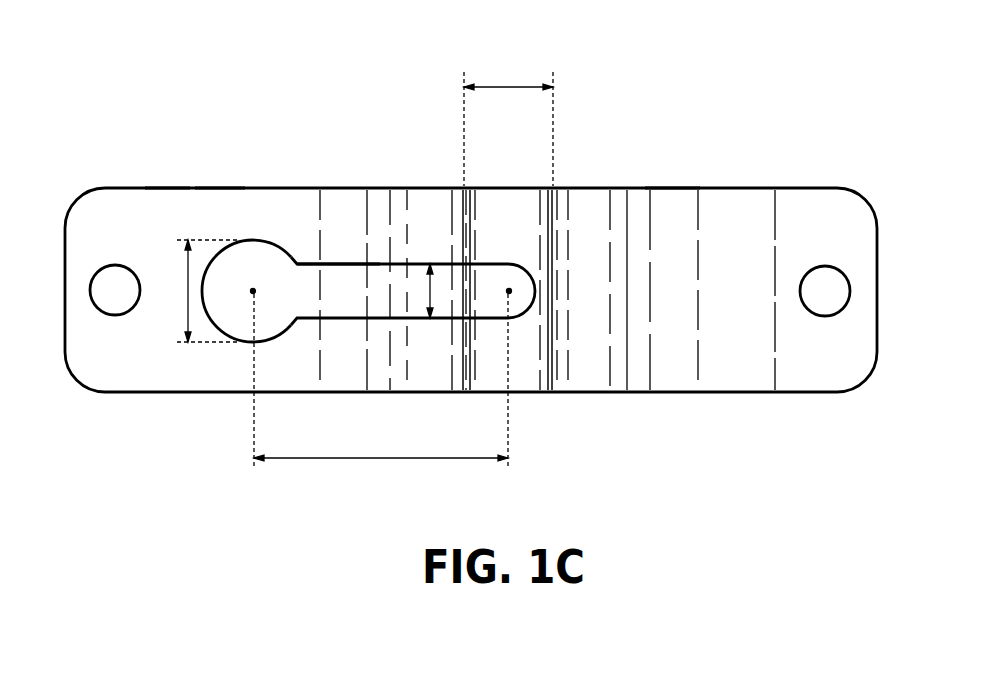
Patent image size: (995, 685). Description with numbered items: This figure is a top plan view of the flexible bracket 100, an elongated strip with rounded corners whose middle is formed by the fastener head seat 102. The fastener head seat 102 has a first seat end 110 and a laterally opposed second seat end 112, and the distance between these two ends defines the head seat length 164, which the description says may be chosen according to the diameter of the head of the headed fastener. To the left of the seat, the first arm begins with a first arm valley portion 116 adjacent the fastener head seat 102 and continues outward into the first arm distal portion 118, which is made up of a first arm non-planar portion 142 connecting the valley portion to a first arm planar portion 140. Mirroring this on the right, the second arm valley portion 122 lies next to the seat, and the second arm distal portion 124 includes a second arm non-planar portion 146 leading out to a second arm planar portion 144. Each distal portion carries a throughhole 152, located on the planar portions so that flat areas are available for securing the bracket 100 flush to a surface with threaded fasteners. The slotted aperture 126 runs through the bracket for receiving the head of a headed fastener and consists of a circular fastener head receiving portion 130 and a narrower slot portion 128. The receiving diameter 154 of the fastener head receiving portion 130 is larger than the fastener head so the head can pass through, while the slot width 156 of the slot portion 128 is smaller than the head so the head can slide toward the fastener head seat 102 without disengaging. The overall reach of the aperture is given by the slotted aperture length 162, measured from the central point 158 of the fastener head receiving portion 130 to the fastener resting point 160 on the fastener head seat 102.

The flexible bracket 100 is at (471, 264).
The fastener head seat 102 is at (510, 203).
The first seat end 110 is at (466, 232).
The second seat end 112 is at (553, 232).
The first arm valley portion 116 is at (434, 376).
The first arm distal portion 118 is at (220, 188).
The second arm valley portion 122 is at (591, 378).
The second arm distal portion 124 is at (672, 194).
The slotted aperture 126 is at (330, 262).
The slot portion 128 is at (348, 288).
The fastener head receiving portion 130 is at (258, 257).
The first arm planar portion 140 is at (166, 200).
The first arm non-planar portion 142 is at (341, 202).
The second arm planar portion 144 is at (790, 202).
The second arm non-planar portion 146 is at (738, 203).
The throughhole 152 is at (115, 278).
The receiving diameter 154 is at (184, 307).
The slot width 156 is at (428, 290).
The central point 158 is at (256, 291).
The fastener resting point 160 is at (508, 291).
The slotted aperture length 162 is at (383, 462).
The head seat length 164 is at (508, 88).